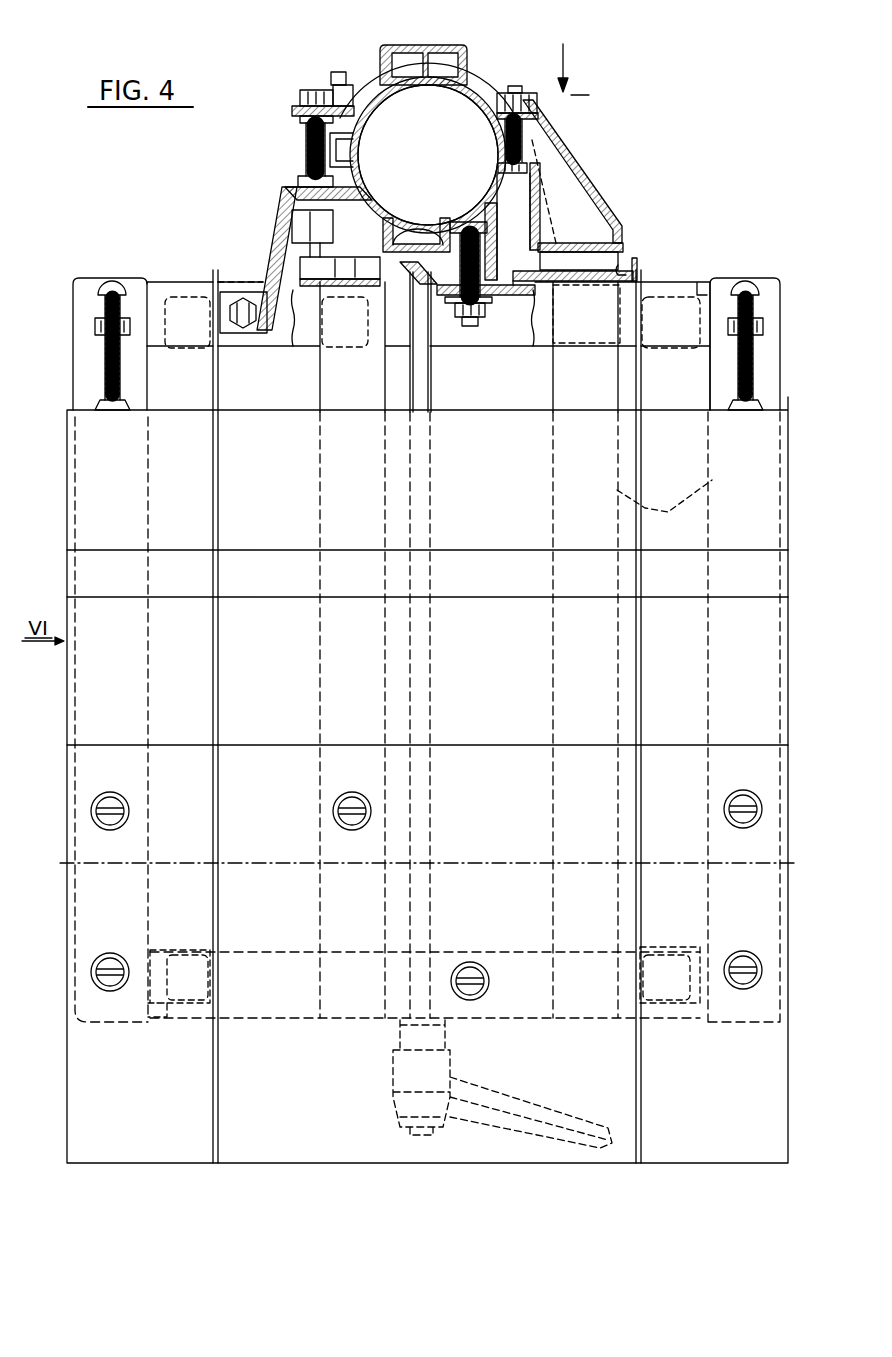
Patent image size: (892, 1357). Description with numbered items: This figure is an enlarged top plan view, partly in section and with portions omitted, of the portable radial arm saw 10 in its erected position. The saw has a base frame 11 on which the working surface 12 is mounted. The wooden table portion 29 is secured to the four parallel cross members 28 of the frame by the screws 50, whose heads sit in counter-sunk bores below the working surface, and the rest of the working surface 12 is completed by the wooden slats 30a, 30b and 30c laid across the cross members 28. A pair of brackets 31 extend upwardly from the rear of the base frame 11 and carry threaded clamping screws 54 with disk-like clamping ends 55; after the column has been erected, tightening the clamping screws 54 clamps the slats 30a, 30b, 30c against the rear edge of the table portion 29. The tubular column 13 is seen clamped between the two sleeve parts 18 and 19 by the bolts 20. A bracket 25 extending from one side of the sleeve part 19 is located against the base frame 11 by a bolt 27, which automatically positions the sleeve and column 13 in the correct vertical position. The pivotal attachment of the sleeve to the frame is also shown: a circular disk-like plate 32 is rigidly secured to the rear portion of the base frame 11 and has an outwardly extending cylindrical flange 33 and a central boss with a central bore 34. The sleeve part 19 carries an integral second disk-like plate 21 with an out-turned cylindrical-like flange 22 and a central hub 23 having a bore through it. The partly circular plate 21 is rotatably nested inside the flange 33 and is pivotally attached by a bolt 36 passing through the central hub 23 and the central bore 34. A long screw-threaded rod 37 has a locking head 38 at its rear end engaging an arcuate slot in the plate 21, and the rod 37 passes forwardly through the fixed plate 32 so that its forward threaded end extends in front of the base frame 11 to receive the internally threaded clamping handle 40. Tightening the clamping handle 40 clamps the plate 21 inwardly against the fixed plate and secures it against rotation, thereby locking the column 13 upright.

The radial arm saw 10 is at (466, 201).
The base frame 11 is at (787, 298).
The working surface 12 is at (92, 406).
The column 13 is at (490, 142).
The sleeve part 18 is at (478, 85).
The sleeve part 19 is at (300, 226).
The bolts 20 is at (305, 100).
The second disk-like plate 21 is at (590, 240).
The out-turned cylindrical-like flange 22 is at (622, 271).
The central hub 23 is at (488, 244).
The bracket 25 is at (253, 260).
The bolt 27 is at (250, 330).
The cross pieces 28 is at (137, 520).
The table portion 29 is at (93, 772).
The wooden slat 30a is at (95, 490).
The wooden slat 30b is at (93, 582).
The wooden slat 30c is at (95, 690).
The brackets 31 is at (77, 280).
The circular disk-like plate 32 is at (593, 283).
The cylindrical flange 33 is at (622, 272).
The central bore 34 is at (500, 312).
The bolt 36 is at (455, 222).
The rod 37 is at (433, 805).
The locking head 38 is at (409, 222).
The clamping handle 40 is at (405, 1077).
The bolts 50 is at (112, 818).
The clamping screws 54 is at (120, 366).
The disk-like clamping ends 55 is at (122, 409).